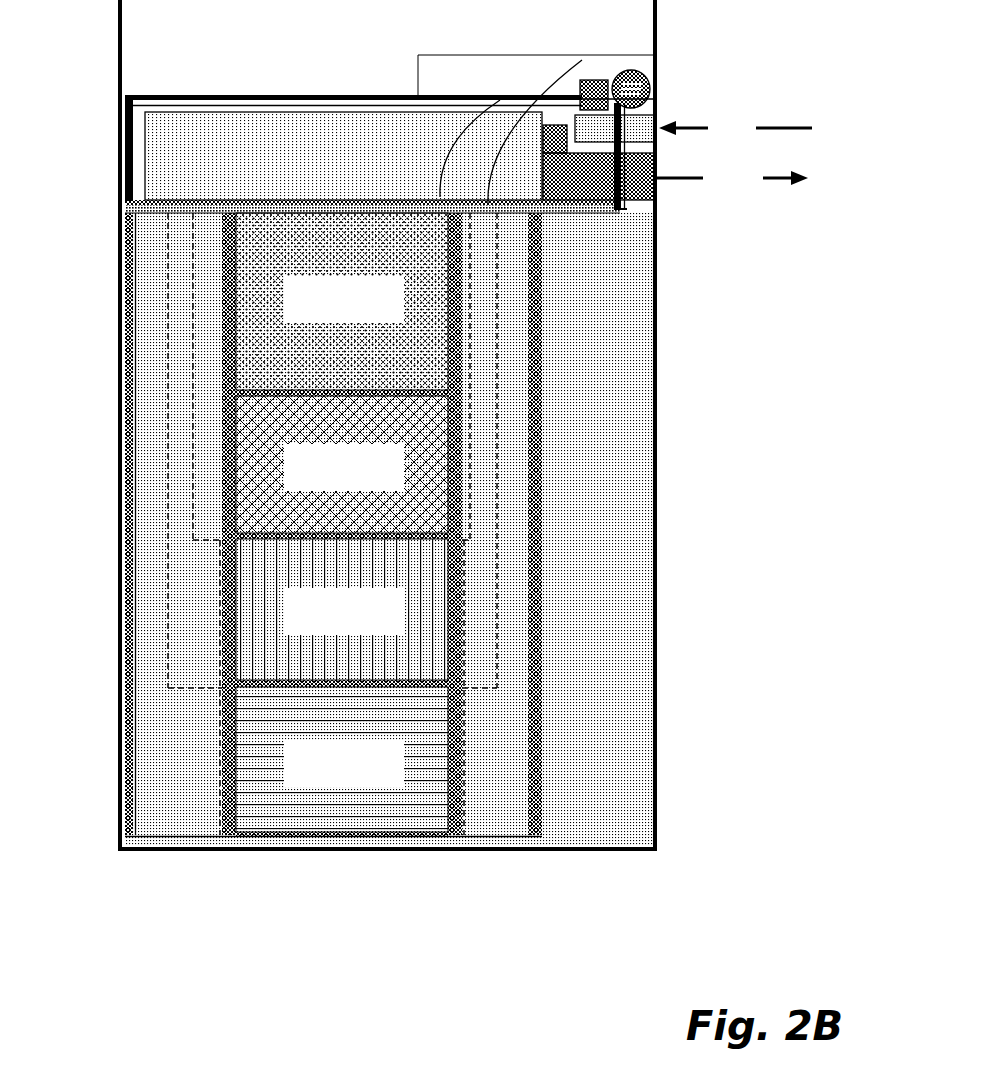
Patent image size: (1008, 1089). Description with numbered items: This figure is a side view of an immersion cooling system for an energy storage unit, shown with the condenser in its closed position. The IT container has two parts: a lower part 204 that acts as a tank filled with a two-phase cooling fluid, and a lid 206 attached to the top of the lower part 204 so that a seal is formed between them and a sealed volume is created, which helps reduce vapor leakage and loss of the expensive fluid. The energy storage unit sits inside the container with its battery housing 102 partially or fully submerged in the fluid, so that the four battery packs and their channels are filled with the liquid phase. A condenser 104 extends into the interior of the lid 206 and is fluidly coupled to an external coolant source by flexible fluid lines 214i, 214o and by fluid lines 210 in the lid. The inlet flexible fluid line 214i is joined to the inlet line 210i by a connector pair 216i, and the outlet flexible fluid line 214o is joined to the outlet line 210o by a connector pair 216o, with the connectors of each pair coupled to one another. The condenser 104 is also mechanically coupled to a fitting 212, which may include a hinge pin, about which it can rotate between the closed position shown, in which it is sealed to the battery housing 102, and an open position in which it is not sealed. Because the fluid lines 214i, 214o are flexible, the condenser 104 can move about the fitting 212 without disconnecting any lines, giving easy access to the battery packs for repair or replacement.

The battery housing 102 is at (550, 557).
The condenser 104 is at (297, 90).
The lower part 204 is at (110, 216).
The lid 206 is at (110, 208).
The fluid lines 210 is at (815, 120).
The inlet line 210i is at (660, 118).
The outlet line 210o is at (655, 198).
The fitting 212 is at (650, 78).
The flexible fluid line 214i is at (598, 80).
The flexible fluid line 214o is at (437, 167).
The connector pair 216i is at (600, 80).
The connector pair 216o is at (570, 153).